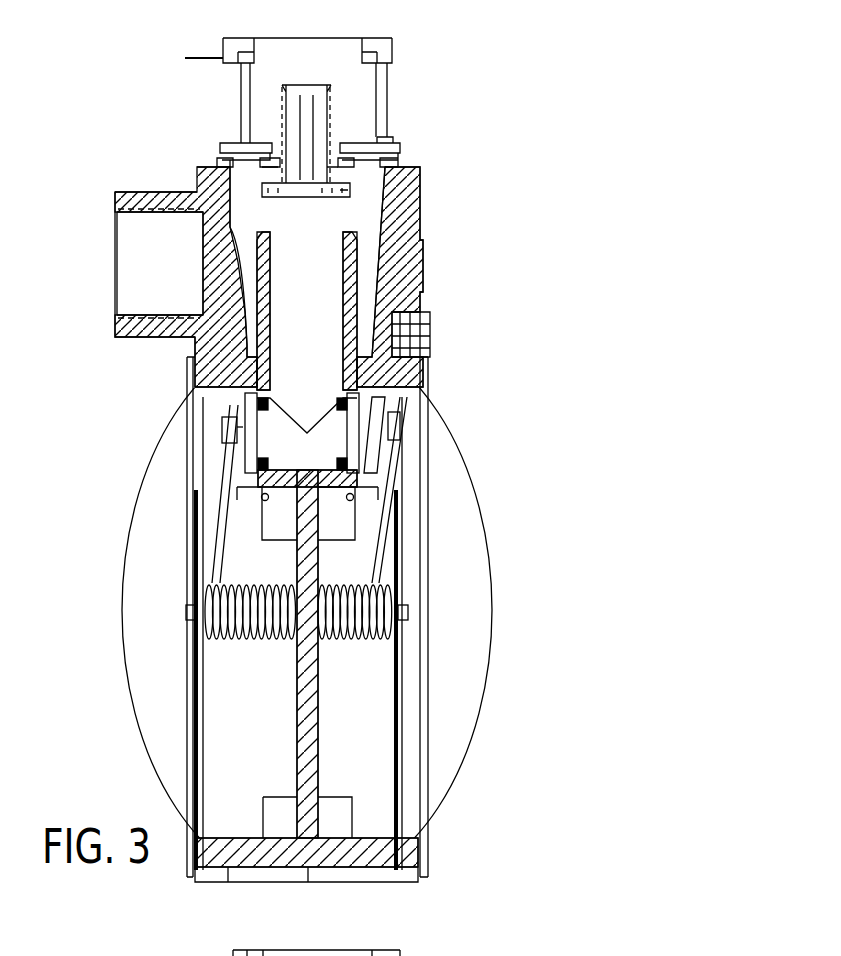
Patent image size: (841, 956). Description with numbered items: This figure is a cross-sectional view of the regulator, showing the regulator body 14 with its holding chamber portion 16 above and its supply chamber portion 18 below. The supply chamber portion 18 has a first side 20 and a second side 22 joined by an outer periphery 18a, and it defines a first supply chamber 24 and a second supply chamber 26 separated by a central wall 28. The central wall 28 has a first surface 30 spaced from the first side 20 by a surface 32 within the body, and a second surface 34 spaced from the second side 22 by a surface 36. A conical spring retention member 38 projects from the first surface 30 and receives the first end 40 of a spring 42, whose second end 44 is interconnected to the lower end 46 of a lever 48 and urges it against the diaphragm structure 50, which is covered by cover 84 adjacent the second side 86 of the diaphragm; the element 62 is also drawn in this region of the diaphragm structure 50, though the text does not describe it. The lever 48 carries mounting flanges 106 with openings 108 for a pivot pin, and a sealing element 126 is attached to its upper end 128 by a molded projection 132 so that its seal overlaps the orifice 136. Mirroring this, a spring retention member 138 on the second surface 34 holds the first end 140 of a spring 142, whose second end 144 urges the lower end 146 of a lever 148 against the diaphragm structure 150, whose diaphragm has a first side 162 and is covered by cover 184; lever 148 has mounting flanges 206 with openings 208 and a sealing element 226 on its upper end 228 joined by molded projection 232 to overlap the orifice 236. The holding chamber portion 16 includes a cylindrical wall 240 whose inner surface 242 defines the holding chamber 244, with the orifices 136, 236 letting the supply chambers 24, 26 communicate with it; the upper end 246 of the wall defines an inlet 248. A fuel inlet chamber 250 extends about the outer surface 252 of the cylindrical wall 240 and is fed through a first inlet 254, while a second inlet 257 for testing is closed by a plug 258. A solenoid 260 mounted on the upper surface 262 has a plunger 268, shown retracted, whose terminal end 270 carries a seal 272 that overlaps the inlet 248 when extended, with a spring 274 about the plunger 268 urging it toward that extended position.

The regulator body 14 is at (388, 866).
The holding chamber portion 16 is at (427, 248).
The supply chamber portion 18 is at (221, 874).
The outer periphery 18a is at (297, 785).
The first side 20 is at (194, 857).
The second side 22 is at (421, 849).
The first supply chamber 24 is at (243, 754).
The second supply chamber 26 is at (390, 781).
The central wall 28 is at (318, 784).
The first surface 30 is at (252, 884).
The surface 32 is at (226, 833).
The second surface 34 is at (314, 786).
The surface 36 is at (398, 834).
The spring retention member 38 is at (287, 641).
The first end of spring 40 is at (292, 652).
The spring 42 is at (267, 583).
The second end of spring 44 is at (215, 650).
The lower end of lever 46 is at (195, 607).
The lever 48 is at (228, 518).
The diaphragm structure 50 is at (243, 410).
The liner 62 is at (208, 787).
The cover 84 is at (121, 649).
The second side of diaphragm 86 is at (194, 823).
The mounting flanges 106 is at (247, 492).
The opening 108 is at (258, 502).
The sealing element 126 is at (248, 385).
The upper end of lever 128 is at (225, 398).
The molded projection 132 is at (225, 437).
The orifice 136 is at (115, 270).
The spring retention member 138 is at (335, 642).
The first end of spring 140 is at (322, 652).
The spring 142 is at (325, 586).
The second end of spring 144 is at (371, 654).
The lower end of lever 146 is at (392, 603).
The lever 148 is at (377, 526).
The diaphragm structure 150 is at (432, 403).
The first side of diaphragm 162 is at (400, 780).
The cover 184 is at (497, 608).
The mounting flanges 206 is at (360, 498).
The opening 208 is at (358, 545).
The sealing element 226 is at (383, 392).
The upper end of lever 228 is at (400, 405).
The molded projection 232 is at (400, 442).
The orifice 236 is at (335, 405).
The cylindrical wall 240 is at (254, 268).
The inner surface 242 is at (306, 203).
The holding chamber 244 is at (328, 311).
The upper end 246 is at (353, 232).
The inlet 248 is at (362, 233).
The fuel inlet chamber 250 is at (372, 265).
The outer surface 252 is at (152, 192).
The first inlet 254 is at (137, 211).
The second inlet 257 is at (380, 314).
The plug 258 is at (425, 336).
The solenoid 260 is at (350, 38).
The upper surface 262 is at (415, 167).
The plunger 268 is at (304, 110).
The terminal end 270 is at (280, 183).
The seal 272 is at (372, 187).
The spring 274 is at (282, 107).